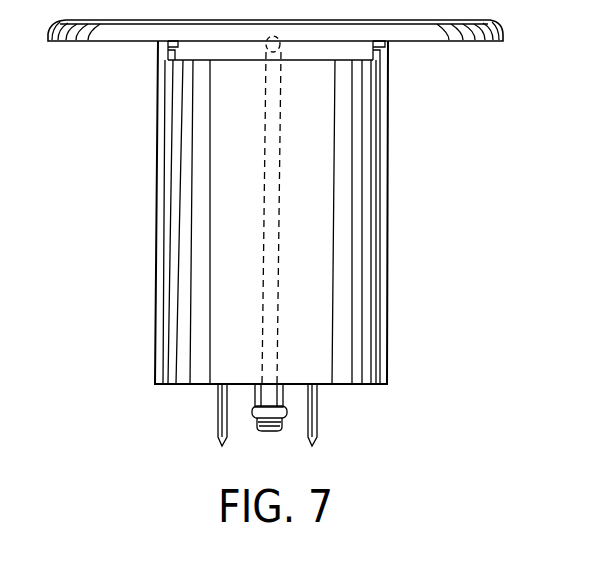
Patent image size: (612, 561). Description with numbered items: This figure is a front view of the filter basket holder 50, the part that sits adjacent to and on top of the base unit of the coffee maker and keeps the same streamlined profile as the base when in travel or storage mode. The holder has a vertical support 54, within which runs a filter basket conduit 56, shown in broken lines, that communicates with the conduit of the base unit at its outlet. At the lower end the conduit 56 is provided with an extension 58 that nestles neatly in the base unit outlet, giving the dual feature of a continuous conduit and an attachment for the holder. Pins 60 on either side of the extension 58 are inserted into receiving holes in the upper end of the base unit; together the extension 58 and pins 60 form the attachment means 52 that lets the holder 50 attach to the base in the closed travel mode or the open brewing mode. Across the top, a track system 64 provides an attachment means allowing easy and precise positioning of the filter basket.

The filter basket holder 50 is at (137, 264).
The attachment means 52 is at (338, 414).
The vertical support 54 is at (358, 224).
The filter basket conduit 56 is at (280, 127).
The extension 58 is at (270, 432).
The pins 60 is at (218, 440).
The track system 64 is at (390, 47).